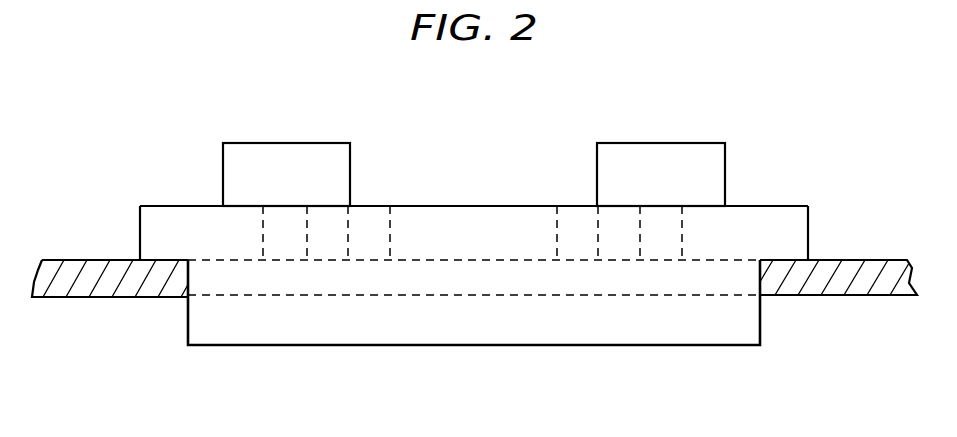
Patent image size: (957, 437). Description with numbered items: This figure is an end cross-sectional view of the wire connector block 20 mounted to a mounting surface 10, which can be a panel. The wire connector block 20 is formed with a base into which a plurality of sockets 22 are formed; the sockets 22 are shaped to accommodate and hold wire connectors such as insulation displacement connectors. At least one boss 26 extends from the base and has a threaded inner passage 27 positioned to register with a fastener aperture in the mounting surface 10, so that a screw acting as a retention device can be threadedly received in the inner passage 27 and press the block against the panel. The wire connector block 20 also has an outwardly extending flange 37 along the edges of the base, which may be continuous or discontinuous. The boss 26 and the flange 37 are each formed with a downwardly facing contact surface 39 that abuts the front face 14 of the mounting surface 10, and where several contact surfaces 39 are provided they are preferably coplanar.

The mounting surface 10 is at (876, 237).
The front face 14 is at (442, 232).
The wire connector block 20 is at (745, 185).
The sockets 22 is at (318, 143).
The boss 26 is at (577, 220).
The threaded inner passage 27 is at (330, 228).
The flange 37 is at (160, 220).
The contact surface 39 is at (165, 284).